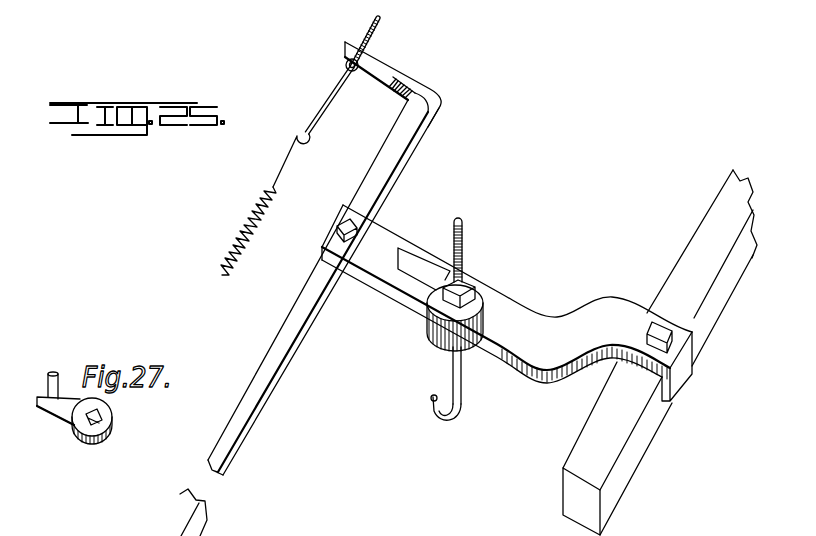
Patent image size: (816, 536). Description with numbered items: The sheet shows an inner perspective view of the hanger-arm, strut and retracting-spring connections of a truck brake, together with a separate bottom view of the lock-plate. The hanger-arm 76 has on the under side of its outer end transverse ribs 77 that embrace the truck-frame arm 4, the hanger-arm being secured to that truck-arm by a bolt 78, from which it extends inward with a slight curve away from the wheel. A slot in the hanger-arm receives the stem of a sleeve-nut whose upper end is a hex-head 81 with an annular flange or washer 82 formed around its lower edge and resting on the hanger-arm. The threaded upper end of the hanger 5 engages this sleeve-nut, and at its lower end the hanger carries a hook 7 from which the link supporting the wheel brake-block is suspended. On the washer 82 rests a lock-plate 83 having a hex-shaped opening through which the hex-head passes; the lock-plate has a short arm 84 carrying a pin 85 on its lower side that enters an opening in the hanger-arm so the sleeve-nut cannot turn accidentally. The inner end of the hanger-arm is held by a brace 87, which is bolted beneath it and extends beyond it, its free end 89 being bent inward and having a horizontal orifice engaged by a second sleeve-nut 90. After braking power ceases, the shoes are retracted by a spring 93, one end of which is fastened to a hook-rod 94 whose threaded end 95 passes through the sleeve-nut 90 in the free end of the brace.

In FIG. 25, the truck-frame arm 4 is at (630, 463).
In FIG. 25, the hanger 5 is at (462, 257).
In FIG. 25, the hook 7 is at (450, 418).
In FIG. 25, the hanger-arm 76 is at (542, 325).
In FIG. 25, the transverse ribs 77 is at (677, 378).
In FIG. 25, the bolt 78 is at (667, 333).
In FIG. 25, the hex-head 81 is at (475, 279).
In FIG. 25, the annular flange or washer 82 is at (473, 305).
In FIG. 27, the lock-plate 83 is at (110, 437).
In FIG. 25, the short arm 84 is at (417, 260).
In FIG. 27, the short arm 84 is at (53, 412).
In FIG. 27, the pin 85 is at (57, 376).
In FIG. 25, the brace 87 is at (252, 403).
In FIG. 25, the free end 89 is at (403, 78).
In FIG. 25, the sleeve-nut 90 is at (345, 65).
In FIG. 25, the spring 93 is at (243, 226).
In FIG. 25, the hook-rod 94 is at (313, 126).
In FIG. 25, the threaded end 95 is at (358, 40).